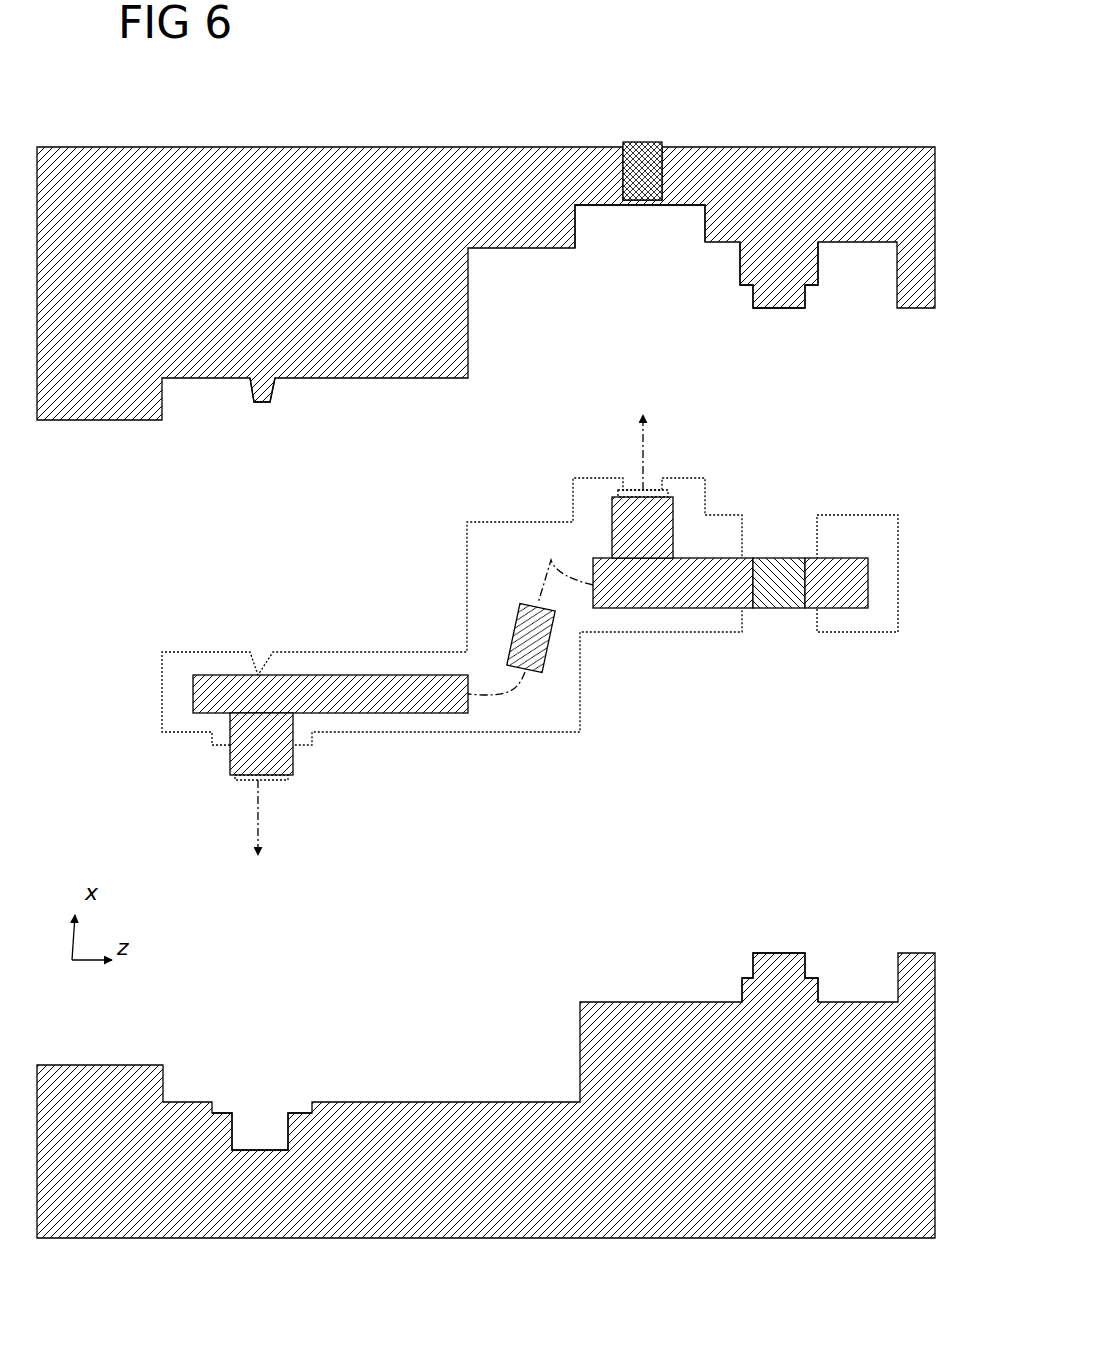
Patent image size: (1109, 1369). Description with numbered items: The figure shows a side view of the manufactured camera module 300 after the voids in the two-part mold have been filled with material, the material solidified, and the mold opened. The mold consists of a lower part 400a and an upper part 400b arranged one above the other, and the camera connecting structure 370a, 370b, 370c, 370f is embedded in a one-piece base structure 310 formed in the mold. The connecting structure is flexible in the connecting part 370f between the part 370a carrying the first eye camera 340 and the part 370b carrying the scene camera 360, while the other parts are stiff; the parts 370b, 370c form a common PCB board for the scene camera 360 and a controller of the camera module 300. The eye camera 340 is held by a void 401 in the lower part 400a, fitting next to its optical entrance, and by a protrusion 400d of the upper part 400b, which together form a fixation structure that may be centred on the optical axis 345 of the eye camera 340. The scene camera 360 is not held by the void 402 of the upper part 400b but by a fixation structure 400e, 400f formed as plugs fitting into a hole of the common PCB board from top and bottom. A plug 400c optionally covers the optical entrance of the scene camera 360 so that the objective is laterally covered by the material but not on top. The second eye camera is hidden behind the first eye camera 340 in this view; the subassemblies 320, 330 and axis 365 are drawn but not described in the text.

The camera module 300 is at (509, 671).
The base structure 310 is at (500, 540).
The second optical subassembly 320 is at (671, 641).
The first optical subassembly 330 is at (327, 809).
The first eye camera 340 is at (274, 803).
The optical axis 345 is at (253, 812).
The scene camera 360 is at (654, 472).
The second optical axis 365 is at (640, 440).
The part of camera connecting structure 370a is at (363, 693).
The part of camera connecting structure 370b is at (725, 598).
The part of camera connecting structure 370c is at (829, 598).
The part of camera connecting structure 370f is at (542, 640).
The lower part of mold 400a is at (453, 1281).
The upper part of mold 400b is at (359, 134).
The plug 400c is at (645, 130).
The protrusion 400d is at (269, 418).
The fixation structure 400e is at (781, 326).
The fixation structure 400f is at (732, 960).
The void 401 is at (270, 1121).
The void 402 is at (627, 249).